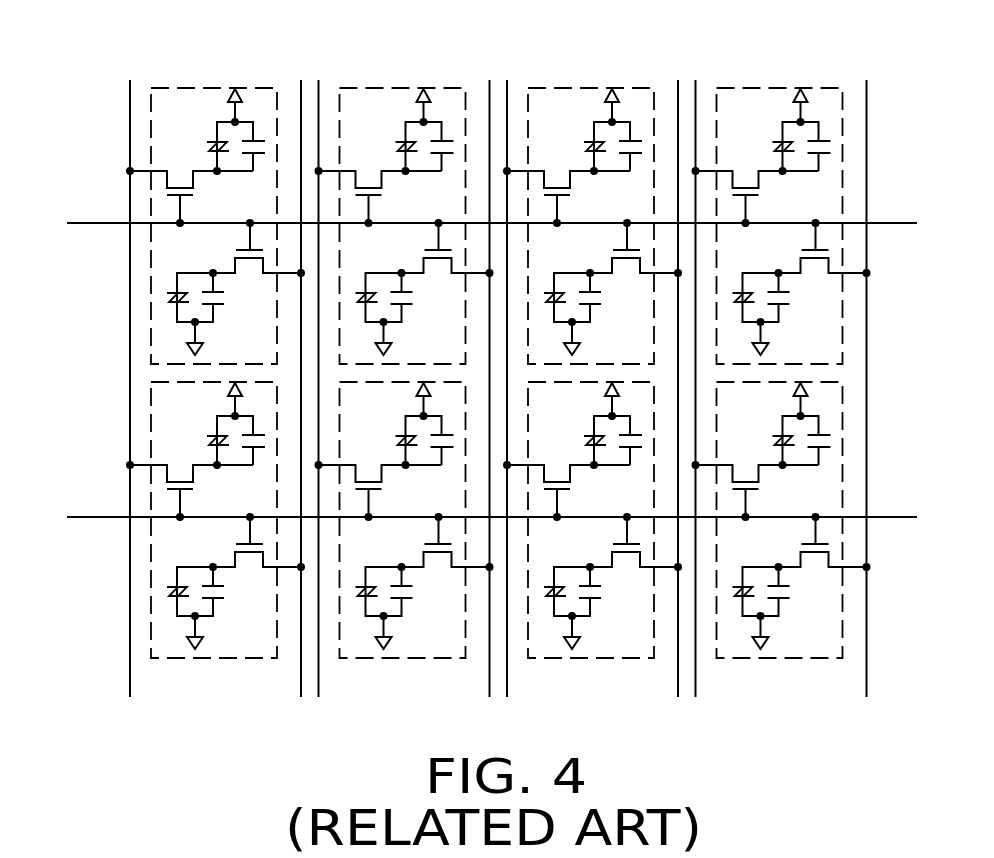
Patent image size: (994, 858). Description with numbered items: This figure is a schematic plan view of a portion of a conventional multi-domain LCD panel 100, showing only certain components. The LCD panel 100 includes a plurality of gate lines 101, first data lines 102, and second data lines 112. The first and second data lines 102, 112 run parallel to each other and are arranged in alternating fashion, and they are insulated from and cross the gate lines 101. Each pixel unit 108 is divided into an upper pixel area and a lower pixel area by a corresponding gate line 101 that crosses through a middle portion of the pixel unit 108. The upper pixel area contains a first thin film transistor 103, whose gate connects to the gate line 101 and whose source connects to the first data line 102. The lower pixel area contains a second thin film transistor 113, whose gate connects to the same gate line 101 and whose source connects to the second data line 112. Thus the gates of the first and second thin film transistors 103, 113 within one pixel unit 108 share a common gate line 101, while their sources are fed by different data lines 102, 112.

The LCD panel 100 is at (494, 34).
The gate line 101 is at (105, 224).
The first data line 102 is at (130, 412).
The first thin film transistor 103 is at (159, 178).
The pixel unit 108 is at (214, 188).
The second data line 112 is at (301, 104).
The second thin film transistor 113 is at (257, 278).